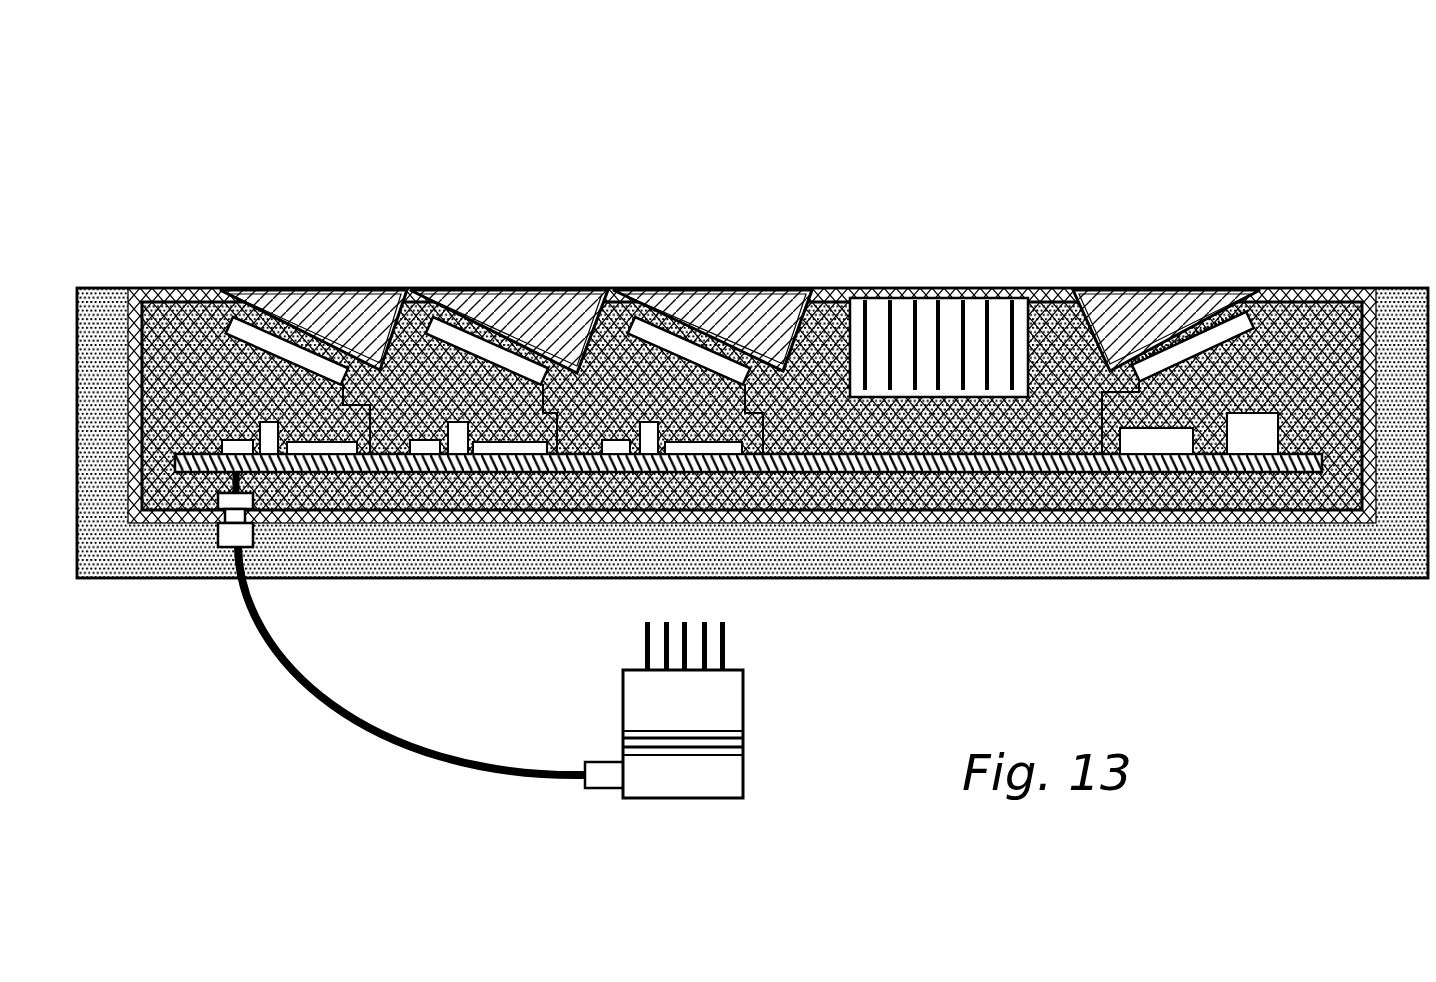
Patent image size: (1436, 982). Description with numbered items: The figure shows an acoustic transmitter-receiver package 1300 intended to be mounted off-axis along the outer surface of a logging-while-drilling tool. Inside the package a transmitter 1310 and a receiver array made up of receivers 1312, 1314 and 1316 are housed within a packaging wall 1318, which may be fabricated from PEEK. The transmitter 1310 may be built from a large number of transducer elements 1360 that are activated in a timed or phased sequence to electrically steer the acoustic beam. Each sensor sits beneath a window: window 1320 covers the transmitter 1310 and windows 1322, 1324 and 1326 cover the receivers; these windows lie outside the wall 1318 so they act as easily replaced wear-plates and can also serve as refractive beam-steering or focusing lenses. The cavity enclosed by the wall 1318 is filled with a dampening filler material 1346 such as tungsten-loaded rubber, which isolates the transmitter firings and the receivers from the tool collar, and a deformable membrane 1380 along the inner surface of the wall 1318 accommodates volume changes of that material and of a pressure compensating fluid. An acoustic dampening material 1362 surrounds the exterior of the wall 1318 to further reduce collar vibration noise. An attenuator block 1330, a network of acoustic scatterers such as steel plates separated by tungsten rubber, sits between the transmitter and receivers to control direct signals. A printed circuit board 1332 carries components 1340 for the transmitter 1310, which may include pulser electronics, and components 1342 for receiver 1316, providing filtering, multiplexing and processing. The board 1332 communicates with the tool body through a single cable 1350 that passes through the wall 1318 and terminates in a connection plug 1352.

The transmitter-receiver package 1300 is at (657, 115).
The transmitter 1310 is at (1217, 337).
The receiver 1312 is at (745, 373).
The receiver 1314 is at (545, 373).
The receiver 1316 is at (353, 378).
The packaging wall 1318 is at (218, 290).
The window 1320 is at (1177, 290).
The window 1322 is at (752, 296).
The window 1324 is at (522, 288).
The window 1326 is at (347, 288).
The attenuator block 1330 is at (1020, 365).
The printed circuit board 1332 is at (1010, 466).
The components 1340 is at (1286, 409).
The components 1342 is at (366, 416).
The filler material 1346 is at (908, 435).
The cable 1350 is at (333, 700).
The connection plug 1352 is at (714, 719).
The transducer elements 1360 is at (1247, 312).
The acoustic dampening material 1362 is at (805, 563).
The deformable membrane 1380 is at (840, 289).